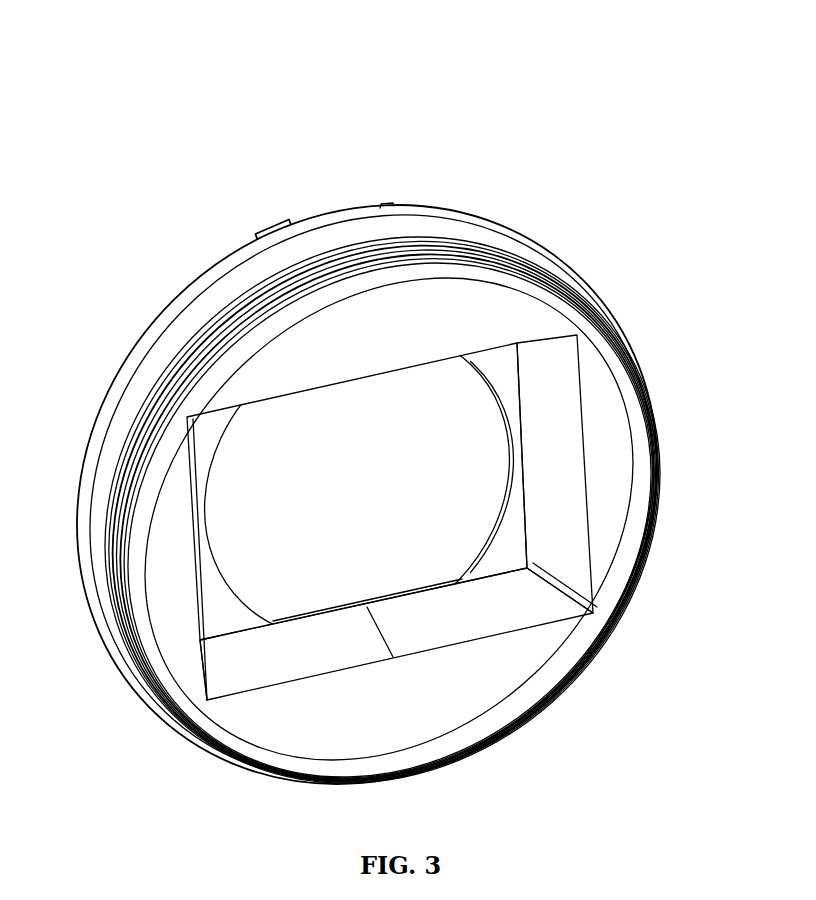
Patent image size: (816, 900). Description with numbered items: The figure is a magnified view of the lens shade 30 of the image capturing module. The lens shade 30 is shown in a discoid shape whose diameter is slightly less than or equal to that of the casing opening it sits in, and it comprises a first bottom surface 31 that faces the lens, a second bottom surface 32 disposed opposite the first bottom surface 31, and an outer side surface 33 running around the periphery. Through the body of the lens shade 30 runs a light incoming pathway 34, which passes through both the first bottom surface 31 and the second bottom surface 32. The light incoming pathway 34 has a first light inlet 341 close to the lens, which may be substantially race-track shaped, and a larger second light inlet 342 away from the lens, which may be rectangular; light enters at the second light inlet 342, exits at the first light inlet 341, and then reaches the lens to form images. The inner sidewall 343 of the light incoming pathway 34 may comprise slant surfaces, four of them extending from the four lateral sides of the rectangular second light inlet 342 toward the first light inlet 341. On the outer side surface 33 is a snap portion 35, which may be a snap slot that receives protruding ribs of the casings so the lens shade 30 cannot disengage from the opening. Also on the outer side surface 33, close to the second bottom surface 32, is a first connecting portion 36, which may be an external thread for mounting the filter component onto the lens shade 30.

The lens shade 30 is at (338, 70).
The first bottom surface 31 is at (418, 200).
The second bottom surface 32 is at (477, 310).
The outer side surface 33 is at (230, 291).
The light incoming pathway 34 is at (517, 522).
The snap portion 35 is at (270, 246).
The first connecting portion 36 is at (173, 337).
The first light inlet 341 is at (500, 393).
The second light inlet 342 is at (592, 553).
The inner sidewall 343 is at (503, 623).